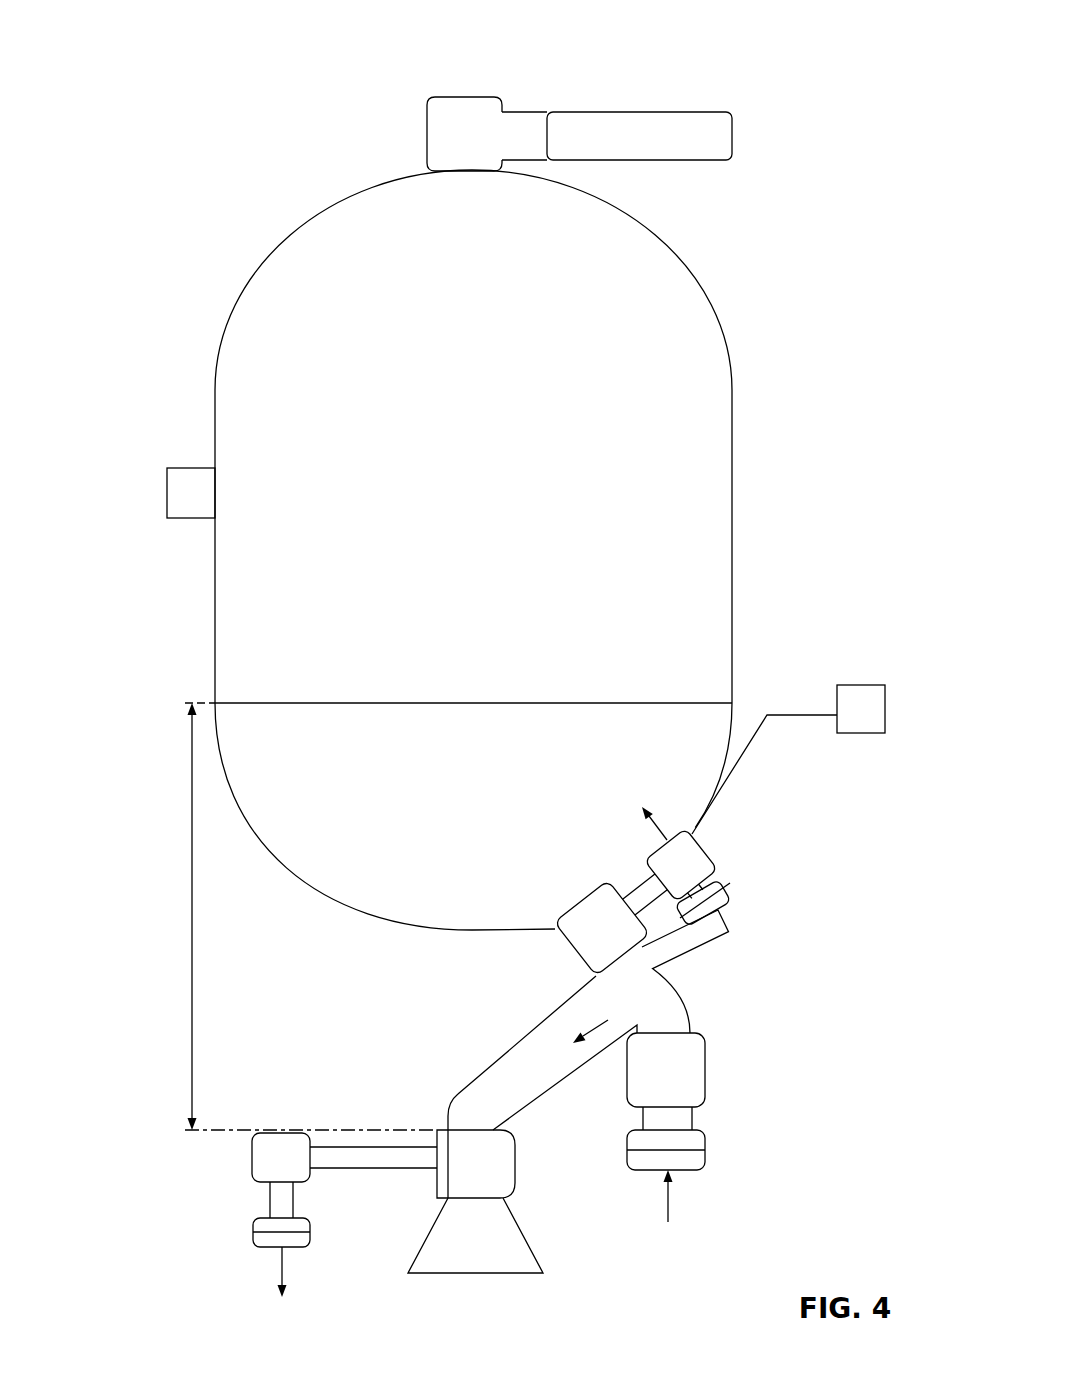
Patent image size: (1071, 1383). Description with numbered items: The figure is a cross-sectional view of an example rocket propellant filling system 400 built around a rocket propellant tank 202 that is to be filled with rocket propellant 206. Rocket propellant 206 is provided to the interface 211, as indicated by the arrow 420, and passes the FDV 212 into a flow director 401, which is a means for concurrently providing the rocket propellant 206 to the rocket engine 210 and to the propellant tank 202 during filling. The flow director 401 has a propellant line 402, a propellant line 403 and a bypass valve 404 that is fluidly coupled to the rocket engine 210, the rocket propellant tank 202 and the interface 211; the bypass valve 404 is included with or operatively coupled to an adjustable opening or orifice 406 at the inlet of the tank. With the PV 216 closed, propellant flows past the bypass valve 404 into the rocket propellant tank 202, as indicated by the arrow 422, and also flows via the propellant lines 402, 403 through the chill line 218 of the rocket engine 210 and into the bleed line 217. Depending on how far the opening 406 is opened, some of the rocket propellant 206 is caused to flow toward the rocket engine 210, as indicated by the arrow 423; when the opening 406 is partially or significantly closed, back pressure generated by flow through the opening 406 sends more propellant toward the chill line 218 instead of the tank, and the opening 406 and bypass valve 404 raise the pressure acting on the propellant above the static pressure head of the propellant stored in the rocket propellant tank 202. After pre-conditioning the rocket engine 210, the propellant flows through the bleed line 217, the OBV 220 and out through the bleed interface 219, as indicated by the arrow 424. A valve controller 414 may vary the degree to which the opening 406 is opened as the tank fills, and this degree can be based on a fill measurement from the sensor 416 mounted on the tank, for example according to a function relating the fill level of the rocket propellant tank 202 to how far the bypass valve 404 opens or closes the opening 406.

The rocket propellant filling system 400 is at (128, 43).
The rocket propellant tank 202 is at (772, 330).
The rocket propellant 206 is at (452, 808).
The rocket engine 210 is at (536, 1295).
The interface 211 is at (700, 1152).
The FDV 212 is at (705, 1068).
The PV 216 is at (563, 947).
The bleed line 217 is at (395, 1158).
The chill line 218 is at (437, 1178).
The bleed interface 219 is at (253, 1225).
The OBV 220 is at (252, 1150).
The flow director 401 is at (470, 1057).
The propellant line 402 is at (635, 993).
The propellant line 403 is at (545, 1058).
The bypass valve 404 is at (705, 842).
The orifice 406 is at (715, 888).
The valve controller 414 is at (868, 685).
The sensor 416 is at (167, 495).
The arrow 420 is at (668, 1200).
The arrow 422 is at (658, 838).
The arrow 423 is at (592, 1028).
The arrow 424 is at (282, 1268).